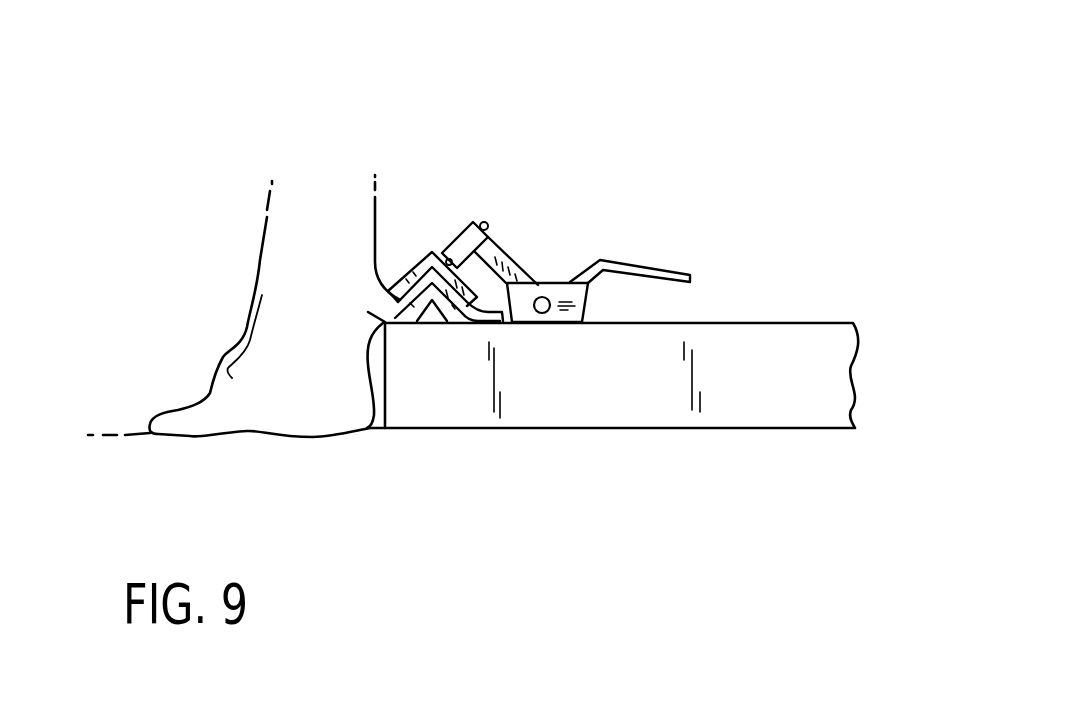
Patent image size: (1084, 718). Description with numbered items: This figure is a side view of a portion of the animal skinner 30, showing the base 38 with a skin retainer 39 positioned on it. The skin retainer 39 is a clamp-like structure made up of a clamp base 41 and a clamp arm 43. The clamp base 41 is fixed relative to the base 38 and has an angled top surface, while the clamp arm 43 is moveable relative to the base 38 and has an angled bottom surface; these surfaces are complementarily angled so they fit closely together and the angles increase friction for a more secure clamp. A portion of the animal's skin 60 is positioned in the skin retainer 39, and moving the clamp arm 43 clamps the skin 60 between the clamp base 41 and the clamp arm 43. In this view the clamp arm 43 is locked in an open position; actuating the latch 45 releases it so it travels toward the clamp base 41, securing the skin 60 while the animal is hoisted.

The animal skinner 30 is at (196, 97).
The base 38 is at (792, 340).
The skin retainer 39 is at (518, 262).
The clamp base 41 is at (413, 280).
The clamp arm 43 is at (470, 237).
The latch 45 is at (648, 268).
The skin 60 is at (287, 257).